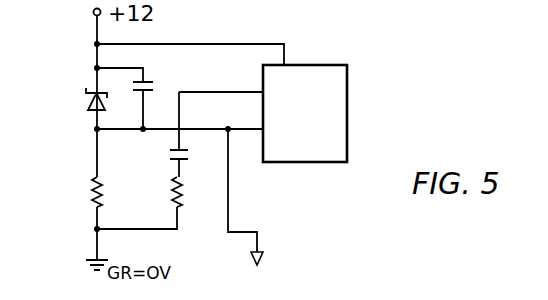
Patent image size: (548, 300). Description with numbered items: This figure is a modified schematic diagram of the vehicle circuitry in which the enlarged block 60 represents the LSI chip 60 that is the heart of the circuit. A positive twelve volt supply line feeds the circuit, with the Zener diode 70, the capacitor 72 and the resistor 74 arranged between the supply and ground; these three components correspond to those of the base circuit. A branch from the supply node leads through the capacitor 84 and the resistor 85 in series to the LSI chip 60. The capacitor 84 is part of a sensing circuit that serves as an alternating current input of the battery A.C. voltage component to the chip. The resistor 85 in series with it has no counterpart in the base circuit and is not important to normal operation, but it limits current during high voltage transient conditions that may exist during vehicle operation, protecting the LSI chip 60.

The LSI chip 60 is at (347, 108).
The Zener diode 70 is at (88, 102).
The capacitor 72 is at (149, 82).
The resistor 74 is at (88, 190).
The capacitor 84 is at (174, 160).
The resistor 85 is at (172, 200).